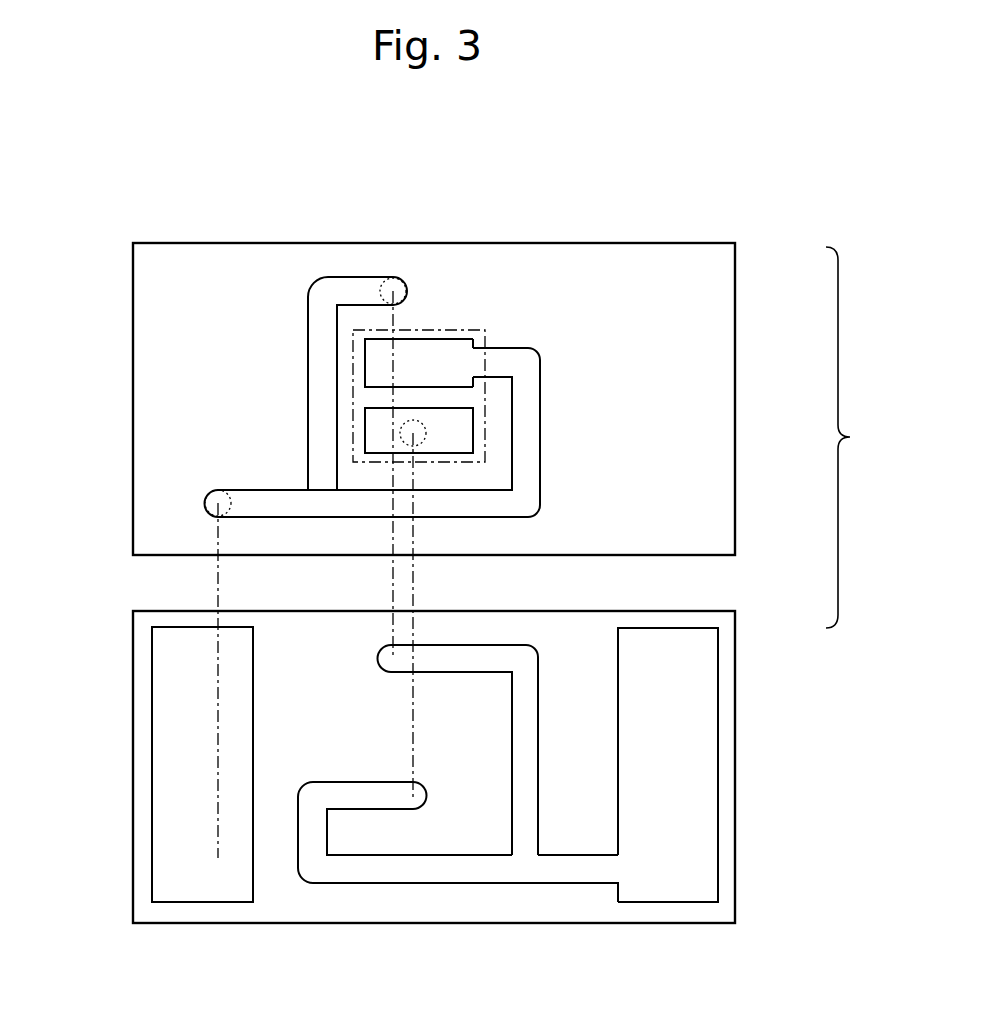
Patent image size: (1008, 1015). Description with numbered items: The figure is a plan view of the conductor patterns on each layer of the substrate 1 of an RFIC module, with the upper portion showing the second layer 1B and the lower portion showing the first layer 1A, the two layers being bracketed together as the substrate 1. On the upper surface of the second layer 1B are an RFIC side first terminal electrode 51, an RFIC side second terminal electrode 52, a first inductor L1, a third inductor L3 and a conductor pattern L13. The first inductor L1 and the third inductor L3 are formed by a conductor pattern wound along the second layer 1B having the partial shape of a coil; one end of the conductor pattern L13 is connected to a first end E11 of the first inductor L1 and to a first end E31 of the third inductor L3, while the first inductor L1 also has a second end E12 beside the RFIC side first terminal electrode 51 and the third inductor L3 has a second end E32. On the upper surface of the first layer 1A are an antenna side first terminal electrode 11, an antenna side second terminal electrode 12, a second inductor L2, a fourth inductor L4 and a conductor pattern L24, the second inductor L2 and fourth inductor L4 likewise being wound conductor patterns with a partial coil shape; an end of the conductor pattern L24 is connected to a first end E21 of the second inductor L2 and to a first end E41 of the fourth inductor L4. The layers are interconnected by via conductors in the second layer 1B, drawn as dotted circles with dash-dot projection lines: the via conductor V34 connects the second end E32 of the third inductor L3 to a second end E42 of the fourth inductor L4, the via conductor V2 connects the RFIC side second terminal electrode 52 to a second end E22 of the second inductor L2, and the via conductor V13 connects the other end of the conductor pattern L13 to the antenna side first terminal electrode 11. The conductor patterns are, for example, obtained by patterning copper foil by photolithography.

The substrate 1 is at (853, 437).
The first layer 1A is at (727, 621).
The second layer 1B is at (717, 279).
The antenna side first terminal electrode 11 is at (167, 763).
The antenna side second terminal electrode 12 is at (705, 762).
The RFIC side first terminal electrode 51 is at (431, 352).
The RFIC side second terminal electrode 52 is at (383, 432).
The first inductor L1 is at (530, 458).
The second inductor L2 is at (313, 793).
The third inductor L3 is at (317, 363).
The fourth inductor L4 is at (526, 703).
The conductor pattern L13 is at (250, 500).
The conductor pattern L24 is at (568, 863).
The first end of the first inductor E11 is at (345, 507).
The second end of the first inductor E12 is at (481, 357).
The first end of the second inductor E21 is at (500, 868).
The second end of the second inductor E22 is at (410, 800).
The first end of the third inductor E31 is at (322, 477).
The second end of the third inductor E32 is at (390, 278).
The first end of the fourth inductor E41 is at (533, 840).
The second end of the fourth inductor E42 is at (378, 655).
The via conductor V2 is at (422, 440).
The via conductor V13 is at (207, 503).
The via conductor V34 is at (386, 282).